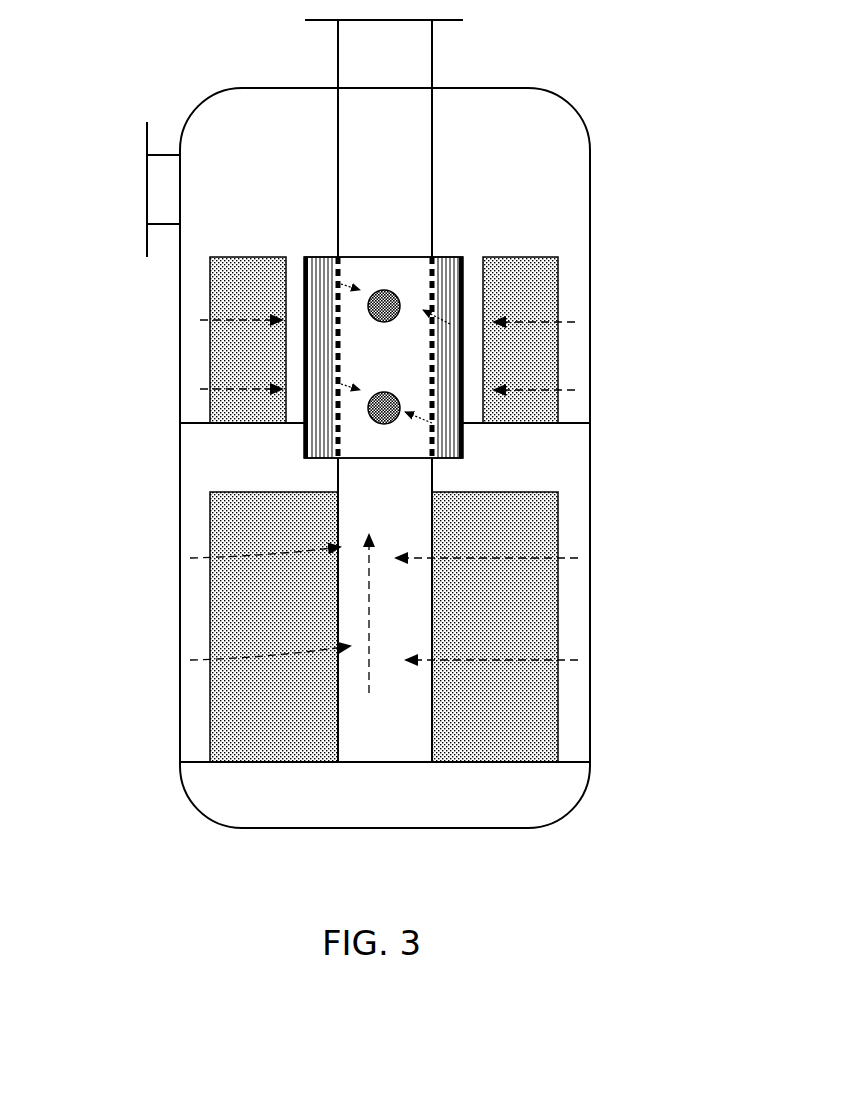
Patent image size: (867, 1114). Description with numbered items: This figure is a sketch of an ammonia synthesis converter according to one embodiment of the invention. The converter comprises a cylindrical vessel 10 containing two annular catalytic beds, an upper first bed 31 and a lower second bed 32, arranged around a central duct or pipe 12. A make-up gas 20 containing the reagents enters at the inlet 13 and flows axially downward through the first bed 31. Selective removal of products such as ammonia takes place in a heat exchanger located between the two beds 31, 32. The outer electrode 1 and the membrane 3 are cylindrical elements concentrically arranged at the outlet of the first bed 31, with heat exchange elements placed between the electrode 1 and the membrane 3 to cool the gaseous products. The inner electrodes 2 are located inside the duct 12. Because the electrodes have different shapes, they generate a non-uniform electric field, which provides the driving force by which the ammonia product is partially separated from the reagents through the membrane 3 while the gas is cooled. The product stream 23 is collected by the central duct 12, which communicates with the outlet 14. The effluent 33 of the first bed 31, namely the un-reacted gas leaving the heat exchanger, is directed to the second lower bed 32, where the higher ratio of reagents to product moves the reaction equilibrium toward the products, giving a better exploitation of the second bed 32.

The outer electrode 1 is at (465, 300).
The inner electrodes 2 is at (382, 322).
The membrane 3 is at (433, 388).
The cylindrical vessel 10 is at (590, 228).
The central duct 12 is at (432, 66).
The inlet 13 is at (162, 158).
The outlet 14 is at (338, 57).
The make-up gas 20 is at (285, 214).
The product stream 23 is at (369, 258).
The first annular catalytic bed 31 is at (545, 344).
The second annular catalytic bed 32 is at (532, 610).
The effluent of the first bed 33 is at (278, 437).